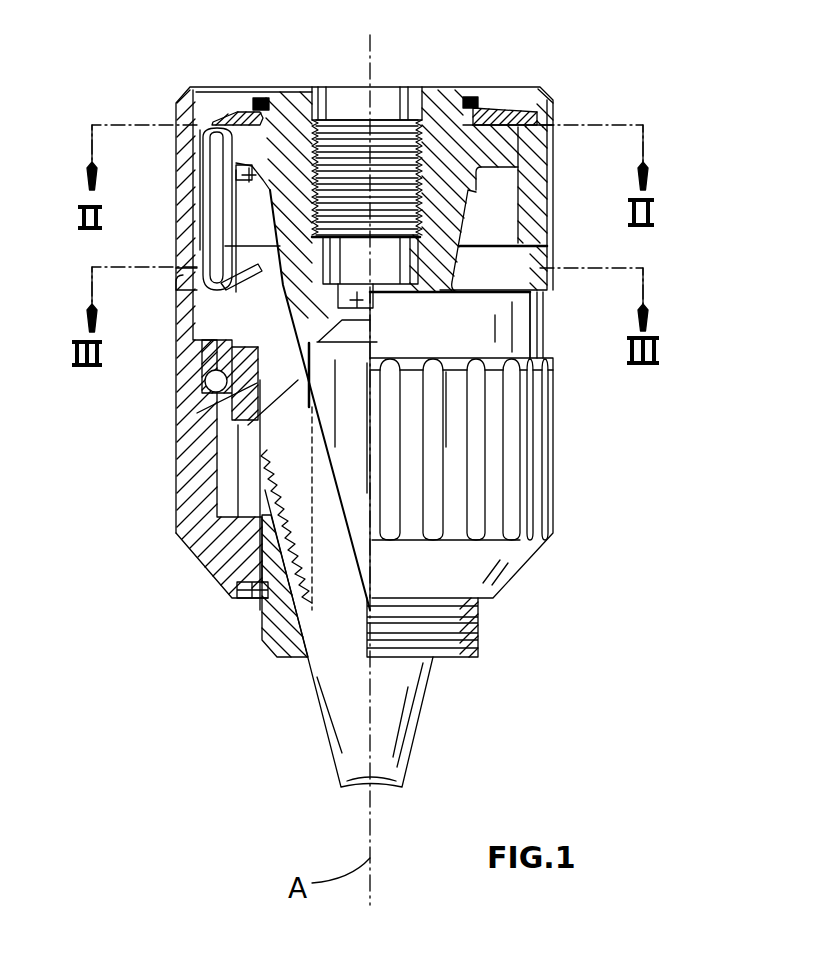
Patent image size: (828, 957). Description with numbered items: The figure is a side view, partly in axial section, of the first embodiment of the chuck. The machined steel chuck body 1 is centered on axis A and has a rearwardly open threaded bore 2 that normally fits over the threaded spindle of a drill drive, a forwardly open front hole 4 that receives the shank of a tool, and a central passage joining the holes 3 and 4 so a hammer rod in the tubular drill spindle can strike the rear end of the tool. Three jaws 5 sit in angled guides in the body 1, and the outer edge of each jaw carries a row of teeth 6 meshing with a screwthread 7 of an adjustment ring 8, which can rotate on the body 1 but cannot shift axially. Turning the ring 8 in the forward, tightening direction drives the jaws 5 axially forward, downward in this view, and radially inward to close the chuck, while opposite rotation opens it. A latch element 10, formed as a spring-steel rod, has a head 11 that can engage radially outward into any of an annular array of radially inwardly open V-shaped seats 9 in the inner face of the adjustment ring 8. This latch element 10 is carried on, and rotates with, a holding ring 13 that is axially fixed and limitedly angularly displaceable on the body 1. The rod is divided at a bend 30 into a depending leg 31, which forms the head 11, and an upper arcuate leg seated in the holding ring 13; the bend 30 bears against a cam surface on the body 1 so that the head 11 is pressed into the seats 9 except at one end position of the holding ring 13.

The chuck body 1 is at (452, 118).
The threaded bore 2 is at (398, 97).
The hole 3 is at (367, 304).
The front hole 4 is at (347, 407).
The jaws 5 is at (340, 713).
The teeth 6 is at (265, 652).
The screwthread 7 is at (254, 380).
The adjustment ring 8 is at (210, 404).
The V-shaped seats 9 is at (198, 262).
The latch element 10 is at (248, 165).
The head 11 is at (228, 293).
The holding ring 13 is at (157, 128).
The bend 30 is at (221, 118).
The depending leg 31 is at (215, 205).